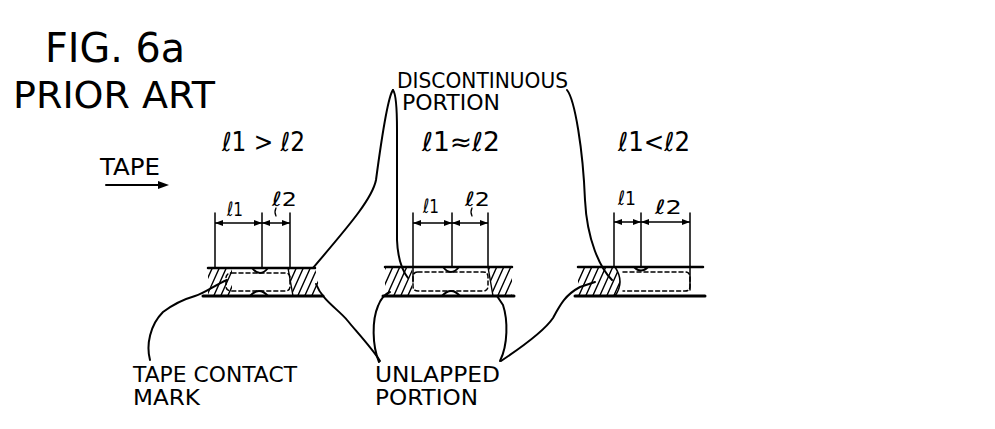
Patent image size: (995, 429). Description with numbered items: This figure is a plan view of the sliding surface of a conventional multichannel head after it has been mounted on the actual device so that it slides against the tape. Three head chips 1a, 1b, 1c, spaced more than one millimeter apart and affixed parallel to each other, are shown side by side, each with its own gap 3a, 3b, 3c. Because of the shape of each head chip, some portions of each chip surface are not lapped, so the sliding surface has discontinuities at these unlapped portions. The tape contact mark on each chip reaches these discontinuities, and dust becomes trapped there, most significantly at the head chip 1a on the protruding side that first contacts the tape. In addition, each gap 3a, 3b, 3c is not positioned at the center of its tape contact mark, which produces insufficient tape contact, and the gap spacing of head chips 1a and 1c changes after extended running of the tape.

The head chip 1a is at (306, 297).
The gap 3a is at (254, 273).
The head chip 1b is at (490, 296).
The gap 3b is at (450, 275).
The head chip 1c is at (676, 294).
The gap 3c is at (642, 310).